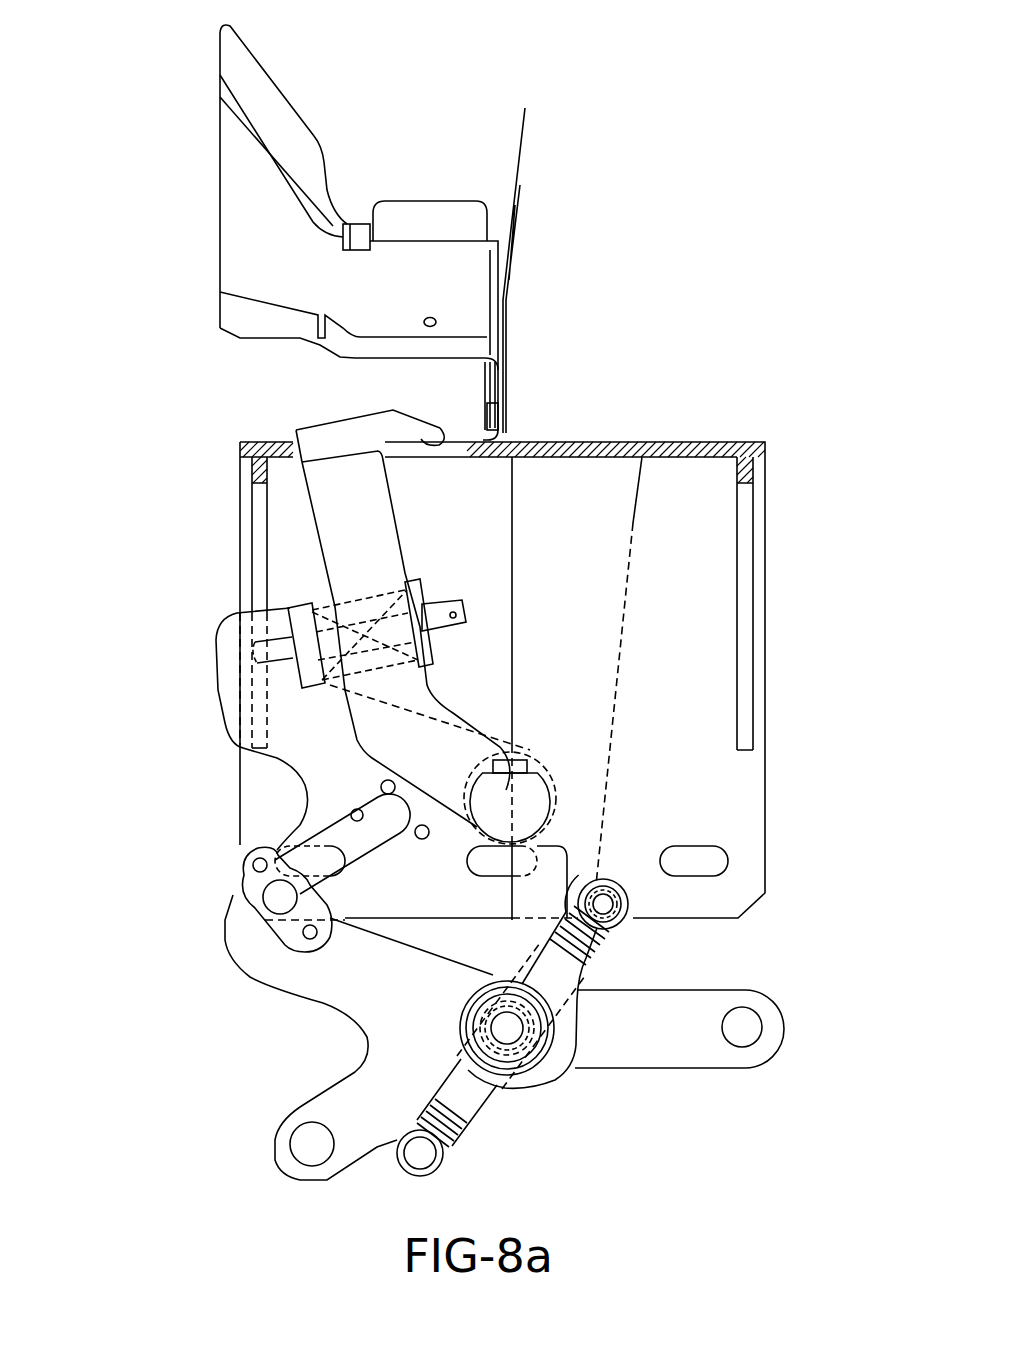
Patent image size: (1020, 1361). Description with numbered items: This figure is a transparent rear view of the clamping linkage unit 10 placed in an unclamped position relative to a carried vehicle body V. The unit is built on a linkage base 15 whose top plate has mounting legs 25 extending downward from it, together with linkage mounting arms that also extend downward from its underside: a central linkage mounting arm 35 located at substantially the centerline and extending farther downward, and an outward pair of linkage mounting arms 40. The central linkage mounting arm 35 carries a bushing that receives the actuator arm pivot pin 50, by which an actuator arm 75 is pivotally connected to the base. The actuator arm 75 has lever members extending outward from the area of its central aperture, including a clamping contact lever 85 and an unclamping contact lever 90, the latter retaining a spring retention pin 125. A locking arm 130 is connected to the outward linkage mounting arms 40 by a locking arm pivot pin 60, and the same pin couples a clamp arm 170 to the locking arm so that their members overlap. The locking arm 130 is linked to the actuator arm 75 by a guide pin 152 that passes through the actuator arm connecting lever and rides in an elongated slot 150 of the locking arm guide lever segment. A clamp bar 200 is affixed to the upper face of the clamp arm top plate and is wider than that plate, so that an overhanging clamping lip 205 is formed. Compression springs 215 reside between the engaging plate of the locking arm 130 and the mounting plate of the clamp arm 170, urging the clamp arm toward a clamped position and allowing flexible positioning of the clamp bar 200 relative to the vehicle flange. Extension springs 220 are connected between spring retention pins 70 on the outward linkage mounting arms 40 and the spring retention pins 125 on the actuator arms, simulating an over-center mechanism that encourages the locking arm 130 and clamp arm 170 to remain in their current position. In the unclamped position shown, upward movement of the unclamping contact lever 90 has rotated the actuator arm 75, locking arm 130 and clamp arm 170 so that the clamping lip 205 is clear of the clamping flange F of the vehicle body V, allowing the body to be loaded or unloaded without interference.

The clamping linkage unit 10 is at (783, 285).
The vehicle body V is at (453, 292).
The clamping flange F is at (503, 378).
The linkage base 15 is at (782, 567).
The mounting legs 25 is at (765, 793).
The outward linkage mounting arms 40 is at (549, 598).
The clamp bar 200 is at (342, 420).
The clamping lip 205 is at (447, 440).
The clamp arm 170 is at (304, 527).
The compression springs 215 is at (355, 607).
The locking arm 130 is at (214, 705).
The locking arm pivot pin 60 is at (528, 797).
The elongated slot 150 is at (360, 820).
The guide pin 152 is at (281, 897).
The actuator arm 75 is at (297, 996).
The clamping contact lever 85 is at (305, 1175).
The spring retention pin 125 is at (421, 1154).
The extension springs 220 is at (447, 1140).
The actuator arm pivot pin 50 is at (533, 1042).
The central linkage mounting arm 35 is at (572, 1015).
The unclamping contact lever 90 is at (760, 1052).
The spring retention pin 70 is at (606, 906).